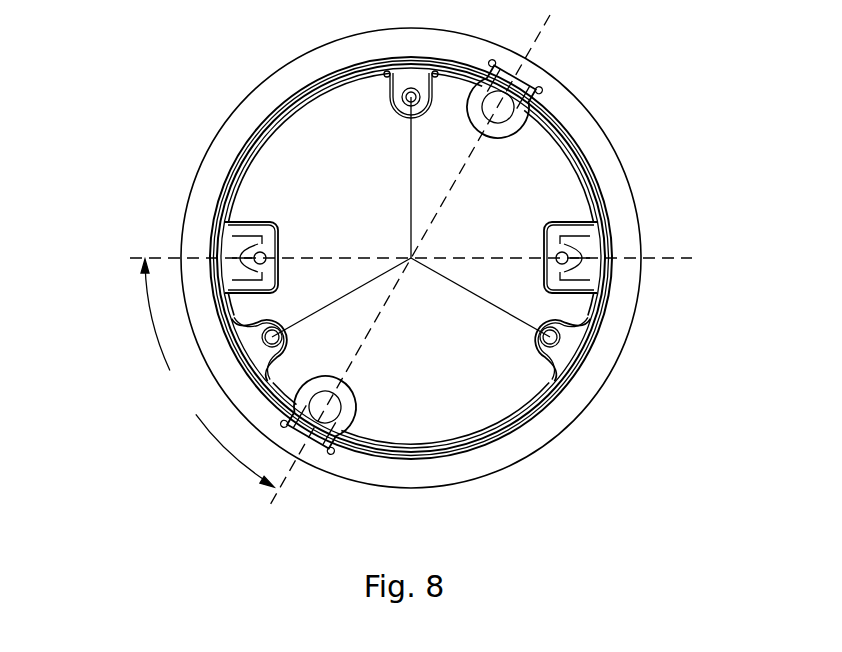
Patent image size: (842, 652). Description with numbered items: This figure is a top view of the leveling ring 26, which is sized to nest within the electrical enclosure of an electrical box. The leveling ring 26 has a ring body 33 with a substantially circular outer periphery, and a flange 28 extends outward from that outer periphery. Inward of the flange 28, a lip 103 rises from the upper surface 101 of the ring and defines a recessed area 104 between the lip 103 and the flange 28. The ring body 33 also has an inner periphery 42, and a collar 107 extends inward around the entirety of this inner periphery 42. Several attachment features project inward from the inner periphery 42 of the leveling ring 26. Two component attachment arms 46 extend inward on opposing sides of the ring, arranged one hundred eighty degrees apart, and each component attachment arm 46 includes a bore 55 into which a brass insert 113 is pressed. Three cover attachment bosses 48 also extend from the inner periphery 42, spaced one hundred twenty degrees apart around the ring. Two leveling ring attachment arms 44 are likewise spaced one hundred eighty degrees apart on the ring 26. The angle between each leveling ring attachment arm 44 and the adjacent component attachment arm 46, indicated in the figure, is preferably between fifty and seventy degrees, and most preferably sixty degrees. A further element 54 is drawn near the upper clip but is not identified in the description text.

The leveling ring 26 is at (120, 118).
The flange 28 is at (600, 152).
The ring body 33 is at (273, 117).
The inner periphery 42 is at (563, 146).
The leveling ring attachment boss 44 is at (350, 397).
The component attachment boss 46 is at (280, 227).
The cover attachment boss 48 is at (393, 112).
The fastener clip 54 is at (508, 100).
The bore 55 is at (546, 262).
The upper surface 101 is at (545, 432).
The lip 103 is at (605, 203).
The recessed area 104 is at (612, 298).
The collar 107 is at (508, 418).
The brass insert 113 is at (553, 254).